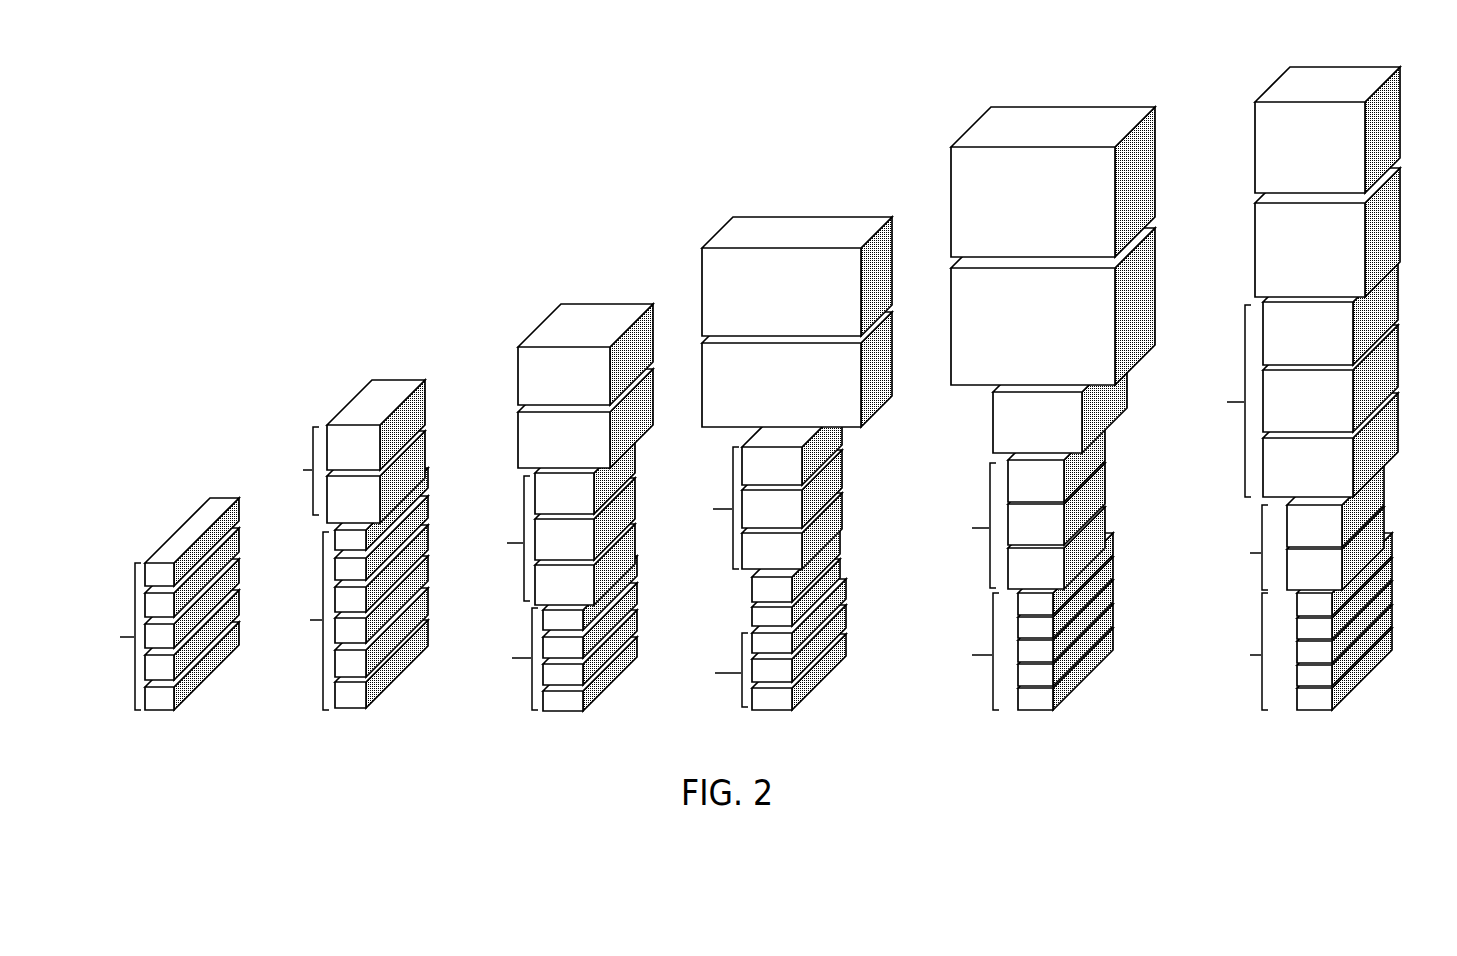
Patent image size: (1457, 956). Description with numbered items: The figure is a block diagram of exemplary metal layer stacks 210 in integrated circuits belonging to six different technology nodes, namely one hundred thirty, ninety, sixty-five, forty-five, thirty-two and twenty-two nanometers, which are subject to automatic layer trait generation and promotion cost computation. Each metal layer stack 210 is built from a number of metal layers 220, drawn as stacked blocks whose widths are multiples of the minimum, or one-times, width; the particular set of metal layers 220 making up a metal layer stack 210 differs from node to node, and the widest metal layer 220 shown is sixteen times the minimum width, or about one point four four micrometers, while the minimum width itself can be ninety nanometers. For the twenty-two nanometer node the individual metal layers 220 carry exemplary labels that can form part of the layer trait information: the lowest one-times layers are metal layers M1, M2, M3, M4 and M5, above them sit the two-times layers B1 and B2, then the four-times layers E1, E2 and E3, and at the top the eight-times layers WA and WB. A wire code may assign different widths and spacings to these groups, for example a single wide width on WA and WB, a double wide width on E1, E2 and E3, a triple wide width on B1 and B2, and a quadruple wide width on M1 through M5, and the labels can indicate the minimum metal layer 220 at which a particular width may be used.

The metal layer stack 210 is at (1215, 83).
The metal layer 220 is at (952, 393).
The metal layer M1 is at (1370, 669).
The metal layer M2 is at (1370, 645).
The metal layer M3 is at (1370, 622).
The metal layer M4 is at (1370, 597).
The metal layer M5 is at (1370, 571).
The metal layer B1 is at (1363, 544).
The metal layer B2 is at (1366, 502).
The metal layer E1 is at (1355, 445).
The metal layer E2 is at (1358, 378).
The metal layer E3 is at (1358, 311).
The metal layer WA is at (1356, 232).
The metal layer WB is at (1356, 130).